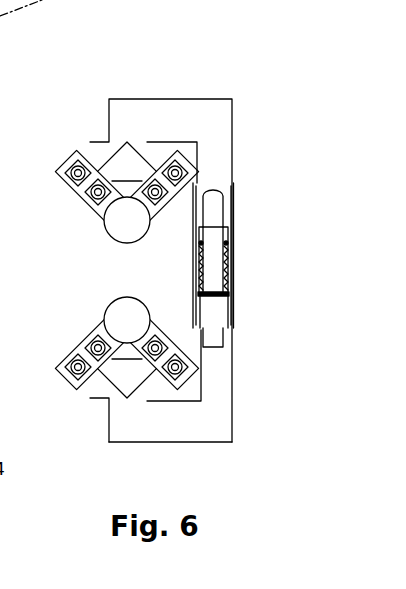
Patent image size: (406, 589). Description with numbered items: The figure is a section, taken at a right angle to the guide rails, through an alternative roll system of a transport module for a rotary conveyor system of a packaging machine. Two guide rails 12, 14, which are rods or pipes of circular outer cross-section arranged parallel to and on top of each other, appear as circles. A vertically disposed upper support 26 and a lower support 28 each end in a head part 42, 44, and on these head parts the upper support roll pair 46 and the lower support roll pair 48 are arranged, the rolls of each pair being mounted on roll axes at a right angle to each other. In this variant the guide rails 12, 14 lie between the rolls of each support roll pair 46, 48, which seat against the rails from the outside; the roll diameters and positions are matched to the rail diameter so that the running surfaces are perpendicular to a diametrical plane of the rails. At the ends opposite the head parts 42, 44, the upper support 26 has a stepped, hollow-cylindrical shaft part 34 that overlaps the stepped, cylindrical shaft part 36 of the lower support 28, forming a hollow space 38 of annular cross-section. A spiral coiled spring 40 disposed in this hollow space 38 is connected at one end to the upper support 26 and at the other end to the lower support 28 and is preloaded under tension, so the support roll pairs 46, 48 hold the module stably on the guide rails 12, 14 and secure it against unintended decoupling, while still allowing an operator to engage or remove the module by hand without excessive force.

The guide rail 12 is at (108, 228).
The guide rail 14 is at (107, 313).
The upper support 26 is at (213, 101).
The lower support 28 is at (200, 433).
The hollow-cylindrical shaft part 34 is at (230, 205).
The cylindrical shaft part 36 is at (213, 305).
The hollow space 38 is at (228, 265).
The spiral coiled spring 40 is at (226, 265).
The head part 42 is at (128, 168).
The head part 44 is at (132, 372).
The upper support roll pair 46 is at (182, 162).
The lower support roll pair 48 is at (75, 377).